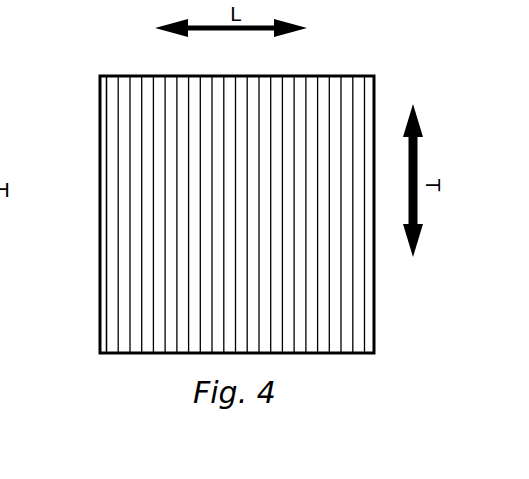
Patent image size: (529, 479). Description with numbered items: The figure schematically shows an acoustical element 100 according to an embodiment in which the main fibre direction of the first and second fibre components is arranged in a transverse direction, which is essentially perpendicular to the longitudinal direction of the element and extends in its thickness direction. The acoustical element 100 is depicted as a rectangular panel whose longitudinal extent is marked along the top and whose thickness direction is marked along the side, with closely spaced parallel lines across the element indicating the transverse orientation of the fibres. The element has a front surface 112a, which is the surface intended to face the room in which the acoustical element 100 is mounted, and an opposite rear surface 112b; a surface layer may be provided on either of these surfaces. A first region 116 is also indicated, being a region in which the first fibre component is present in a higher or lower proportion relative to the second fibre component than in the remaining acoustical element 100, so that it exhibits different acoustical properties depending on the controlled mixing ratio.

The acoustical element 100 is at (397, 280).
The front surface 112a is at (123, 94).
The rear surface 112b is at (88, 196).
The first region 116 is at (142, 148).